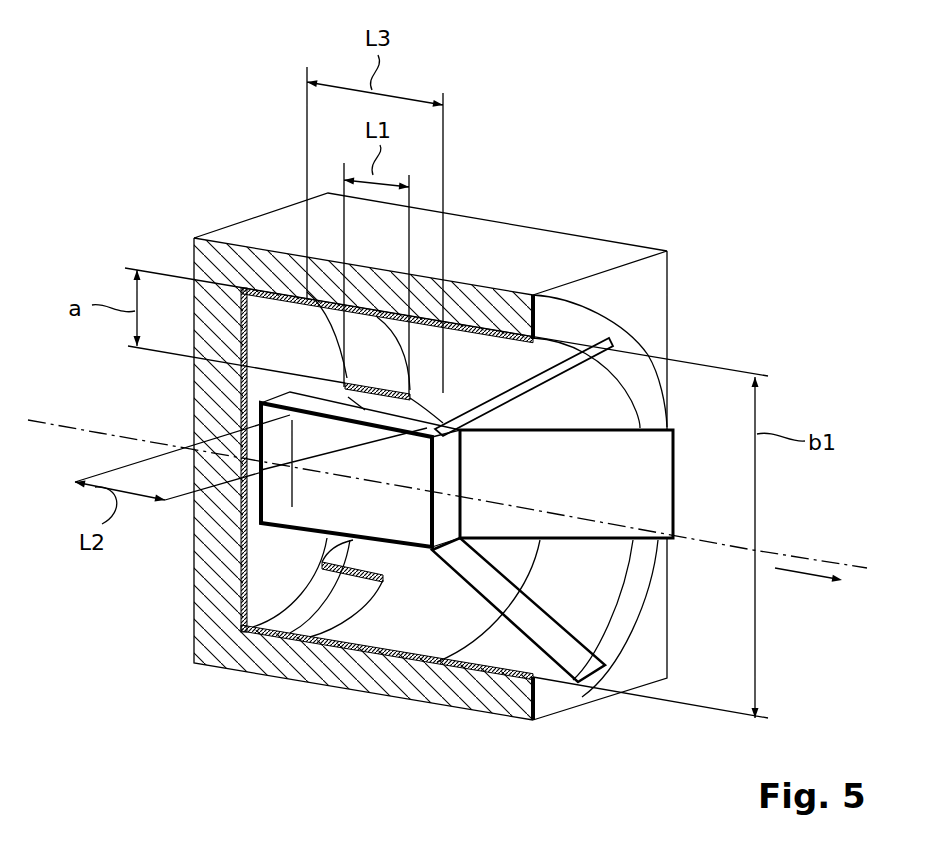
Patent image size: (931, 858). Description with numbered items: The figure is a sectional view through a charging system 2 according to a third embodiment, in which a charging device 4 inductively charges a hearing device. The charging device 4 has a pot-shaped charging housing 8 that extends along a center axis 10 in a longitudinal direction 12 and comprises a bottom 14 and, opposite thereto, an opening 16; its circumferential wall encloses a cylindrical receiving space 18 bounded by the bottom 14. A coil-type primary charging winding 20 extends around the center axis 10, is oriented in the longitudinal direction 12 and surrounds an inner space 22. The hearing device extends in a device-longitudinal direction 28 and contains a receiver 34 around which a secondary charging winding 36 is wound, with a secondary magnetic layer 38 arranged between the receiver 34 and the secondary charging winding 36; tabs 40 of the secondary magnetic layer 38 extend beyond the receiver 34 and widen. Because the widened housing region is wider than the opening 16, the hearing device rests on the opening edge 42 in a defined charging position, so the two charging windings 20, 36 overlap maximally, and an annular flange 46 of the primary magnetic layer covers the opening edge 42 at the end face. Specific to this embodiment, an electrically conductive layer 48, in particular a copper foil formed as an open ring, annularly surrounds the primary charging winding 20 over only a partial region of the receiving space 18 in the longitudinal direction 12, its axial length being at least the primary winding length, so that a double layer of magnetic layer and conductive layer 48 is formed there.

The charging system 2 is at (690, 216).
The charging device 4 is at (186, 257).
The charging housing 8 is at (203, 395).
The center axis 10 is at (812, 562).
The longitudinal direction 12 is at (803, 609).
The bottom 14 is at (255, 603).
The opening 16 is at (607, 391).
The receiving space 18 is at (443, 423).
The primary charging winding 20 is at (382, 582).
The inner space 22 is at (300, 625).
The device-longitudinal direction 28 is at (805, 578).
The receiver 34 is at (255, 527).
The secondary charging winding 36 is at (345, 385).
The secondary magnetic layer 38 is at (490, 318).
The tabs 40 is at (665, 453).
The opening edge 42 is at (613, 567).
The annular flange 46 is at (613, 637).
The electrically conductive layer 48 is at (400, 688).